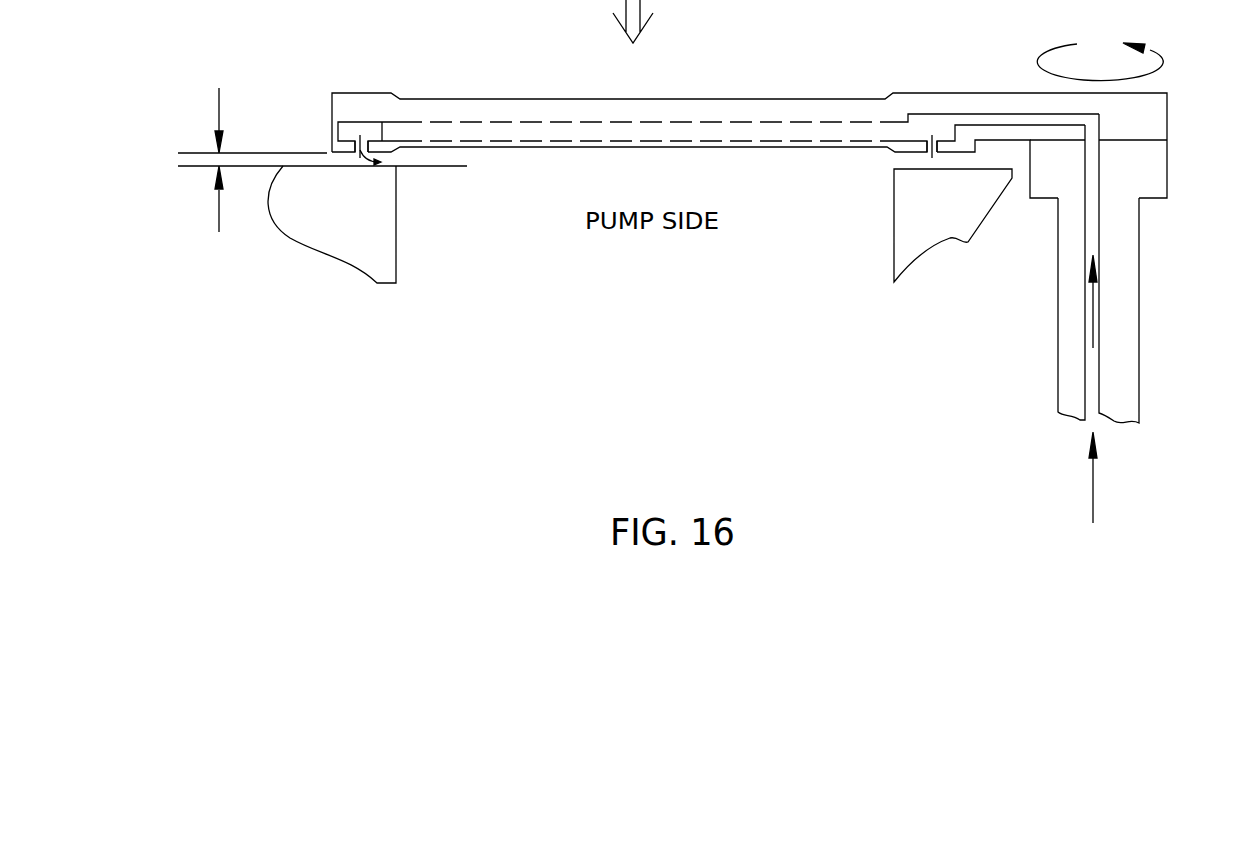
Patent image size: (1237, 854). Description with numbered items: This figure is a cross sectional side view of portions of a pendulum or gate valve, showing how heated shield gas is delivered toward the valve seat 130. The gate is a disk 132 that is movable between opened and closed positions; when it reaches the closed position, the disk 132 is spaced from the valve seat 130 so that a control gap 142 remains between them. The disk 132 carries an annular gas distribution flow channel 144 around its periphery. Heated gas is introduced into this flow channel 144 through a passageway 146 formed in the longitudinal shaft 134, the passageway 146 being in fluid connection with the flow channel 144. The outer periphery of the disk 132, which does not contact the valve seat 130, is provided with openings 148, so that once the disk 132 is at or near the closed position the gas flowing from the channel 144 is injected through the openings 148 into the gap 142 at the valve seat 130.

The valve seat 130 is at (347, 163).
The disk 132 is at (355, 112).
The longitudinal shaft 134 is at (1139, 295).
The gap 142 is at (392, 153).
The annular gas distribution flow channel 144 is at (497, 130).
The passageway 146 is at (1085, 205).
The openings 148 is at (360, 135).